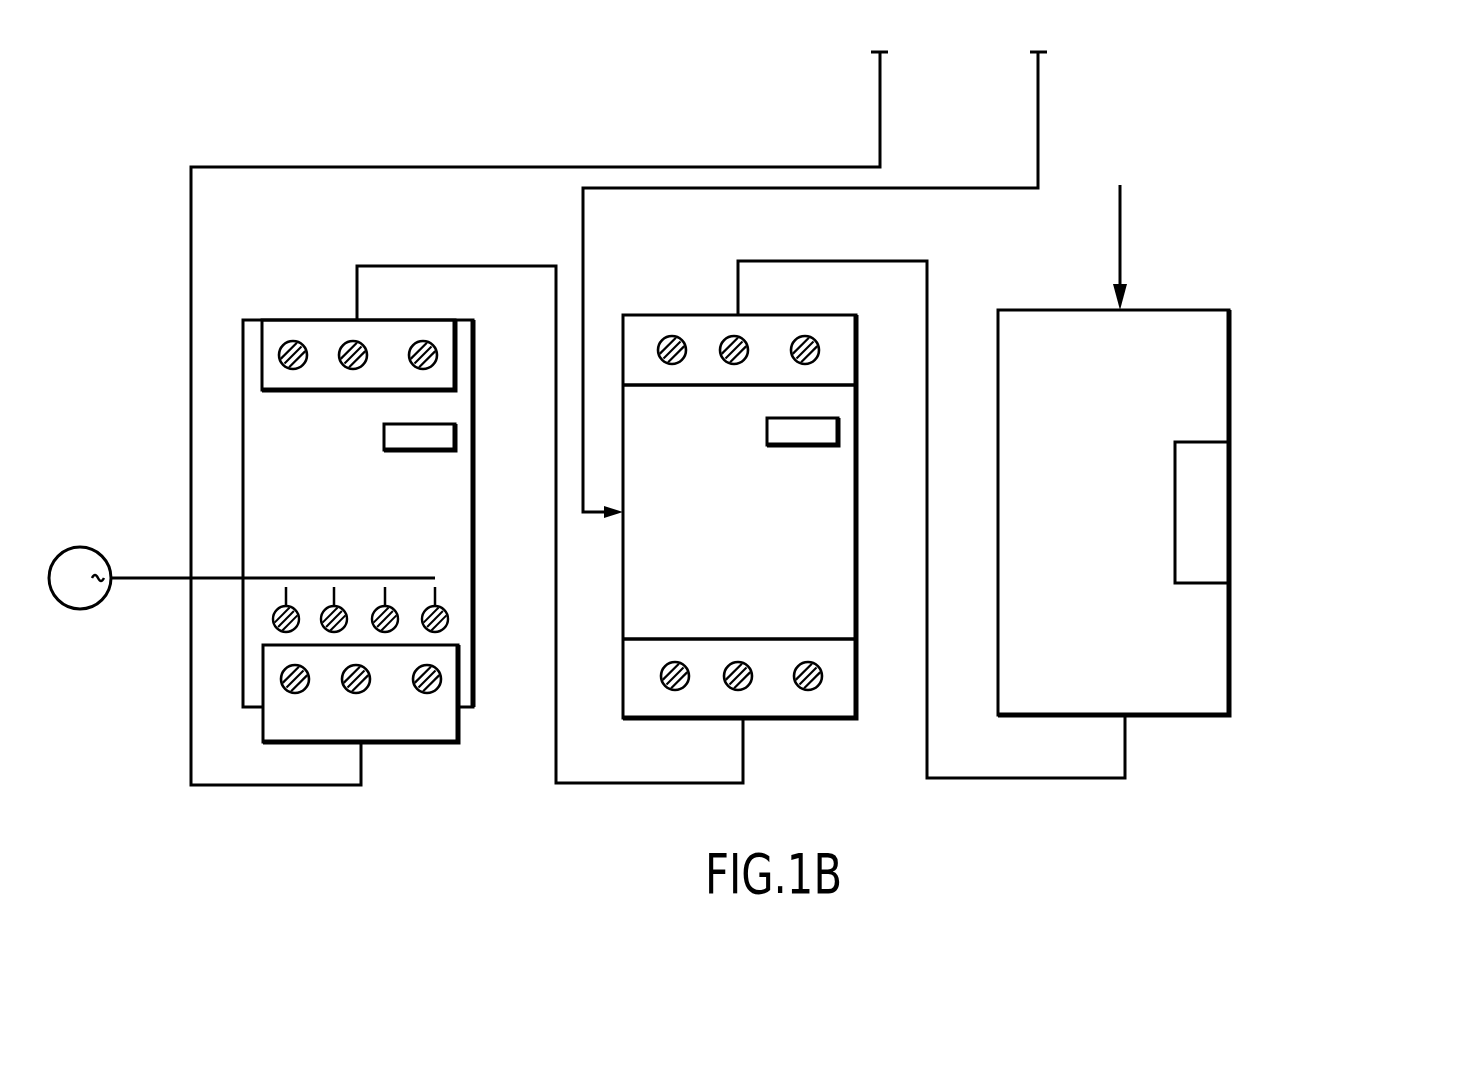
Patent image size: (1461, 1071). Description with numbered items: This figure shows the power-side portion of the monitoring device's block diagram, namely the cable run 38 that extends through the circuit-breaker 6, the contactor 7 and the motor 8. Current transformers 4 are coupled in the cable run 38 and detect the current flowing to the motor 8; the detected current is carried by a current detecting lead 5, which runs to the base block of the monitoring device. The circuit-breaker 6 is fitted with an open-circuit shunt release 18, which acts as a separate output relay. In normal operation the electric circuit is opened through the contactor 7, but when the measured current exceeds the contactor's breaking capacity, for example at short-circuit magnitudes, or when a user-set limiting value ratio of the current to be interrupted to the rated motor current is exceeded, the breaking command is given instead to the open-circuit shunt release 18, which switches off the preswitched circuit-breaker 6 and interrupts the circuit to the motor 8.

The current transformers 4 is at (253, 320).
The current detecting lead 5 is at (191, 408).
The circuit-breaker 6 is at (1017, 310).
The contactor 7 is at (650, 315).
The motor 8 is at (85, 547).
The open-circuit shunt release 18 is at (1223, 463).
The cable run 38 is at (140, 646).